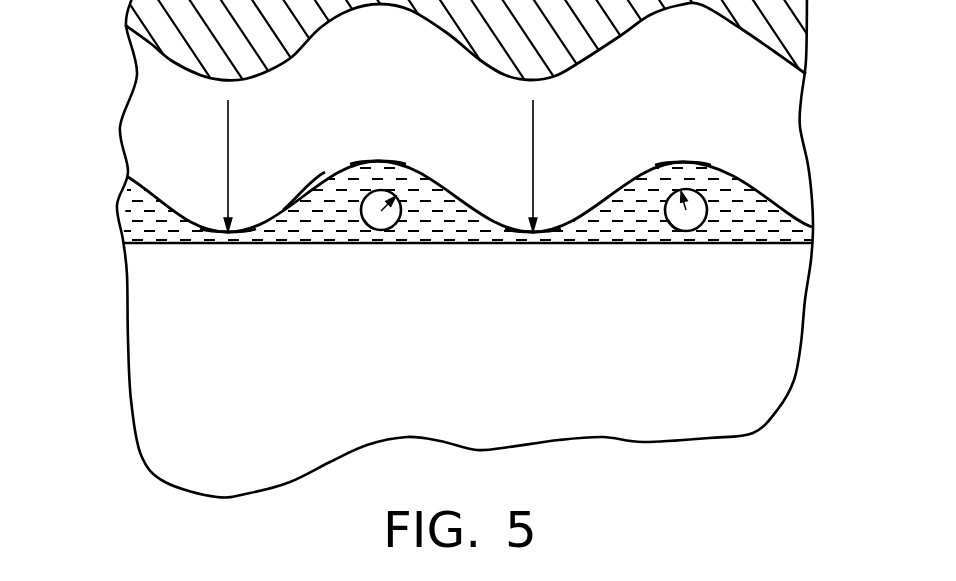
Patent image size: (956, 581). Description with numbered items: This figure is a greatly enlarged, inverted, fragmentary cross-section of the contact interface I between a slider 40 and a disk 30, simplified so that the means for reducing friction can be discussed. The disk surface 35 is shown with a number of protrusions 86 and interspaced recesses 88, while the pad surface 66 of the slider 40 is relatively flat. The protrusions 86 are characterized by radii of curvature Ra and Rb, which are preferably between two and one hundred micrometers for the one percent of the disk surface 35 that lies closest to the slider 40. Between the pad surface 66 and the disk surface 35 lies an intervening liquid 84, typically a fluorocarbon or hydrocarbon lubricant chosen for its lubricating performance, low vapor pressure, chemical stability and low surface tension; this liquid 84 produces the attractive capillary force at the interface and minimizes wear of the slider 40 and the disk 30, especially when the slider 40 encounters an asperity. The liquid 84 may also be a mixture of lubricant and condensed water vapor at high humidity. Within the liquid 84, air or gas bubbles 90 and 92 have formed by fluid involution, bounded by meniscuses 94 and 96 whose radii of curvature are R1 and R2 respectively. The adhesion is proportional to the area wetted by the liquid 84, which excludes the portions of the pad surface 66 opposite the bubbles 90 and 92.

The disk 30 is at (108, 90).
The slider 40 is at (146, 356).
The intervening liquid 84 is at (121, 224).
The pad surface 66 is at (478, 246).
The protrusions 86 is at (203, 228).
The recesses 88 is at (375, 160).
The disk surface 35 is at (302, 200).
The air or gas bubble 90 is at (404, 232).
The air or gas bubble 92 is at (709, 232).
The meniscus 94 is at (366, 229).
The meniscus 96 is at (671, 230).
The radius of curvature of meniscus R1 is at (385, 195).
The radius of curvature of meniscus R2 is at (688, 206).
The radius of curvature of protrusion Ra is at (229, 122).
The radius of curvature of protrusion Rb is at (534, 122).
The contact interface I is at (831, 237).